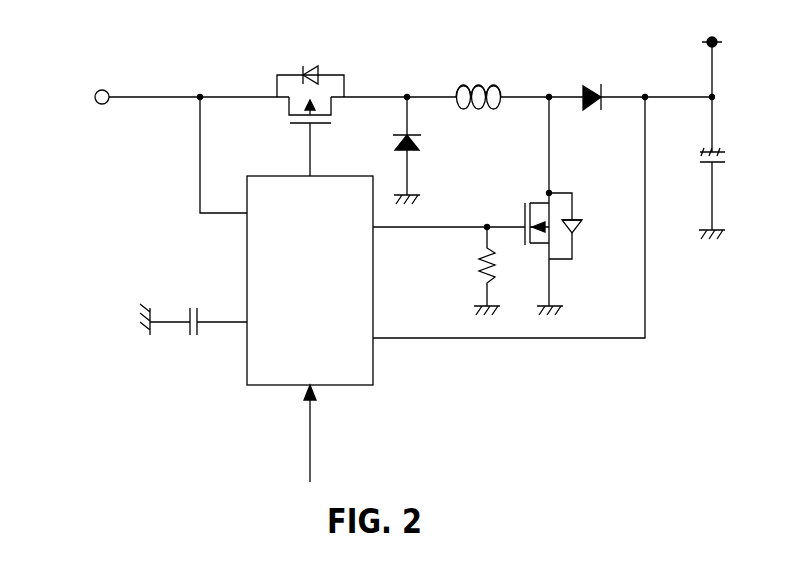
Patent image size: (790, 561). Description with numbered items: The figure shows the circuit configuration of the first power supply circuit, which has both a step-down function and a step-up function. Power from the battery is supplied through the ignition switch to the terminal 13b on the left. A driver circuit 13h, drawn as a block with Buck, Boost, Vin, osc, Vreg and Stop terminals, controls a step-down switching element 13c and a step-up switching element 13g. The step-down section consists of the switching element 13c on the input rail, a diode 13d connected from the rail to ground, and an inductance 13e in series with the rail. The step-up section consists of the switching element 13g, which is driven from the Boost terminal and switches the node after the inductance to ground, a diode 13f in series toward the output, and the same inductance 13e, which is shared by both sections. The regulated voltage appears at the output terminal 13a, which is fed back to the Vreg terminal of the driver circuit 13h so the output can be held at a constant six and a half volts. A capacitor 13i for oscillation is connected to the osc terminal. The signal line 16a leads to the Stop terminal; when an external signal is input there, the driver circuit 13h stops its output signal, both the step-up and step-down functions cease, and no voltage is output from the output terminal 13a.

The output terminal 13a is at (718, 37).
The terminal 13b is at (96, 92).
The step-down switching element 13c is at (288, 73).
The diode 13d is at (422, 137).
The inductance 13e is at (487, 81).
The diode 13f is at (592, 80).
The step-up switching element 13g is at (575, 240).
The driver circuit 13h is at (247, 275).
The capacitor for oscillation 13i is at (192, 340).
The signal line 16a is at (312, 428).